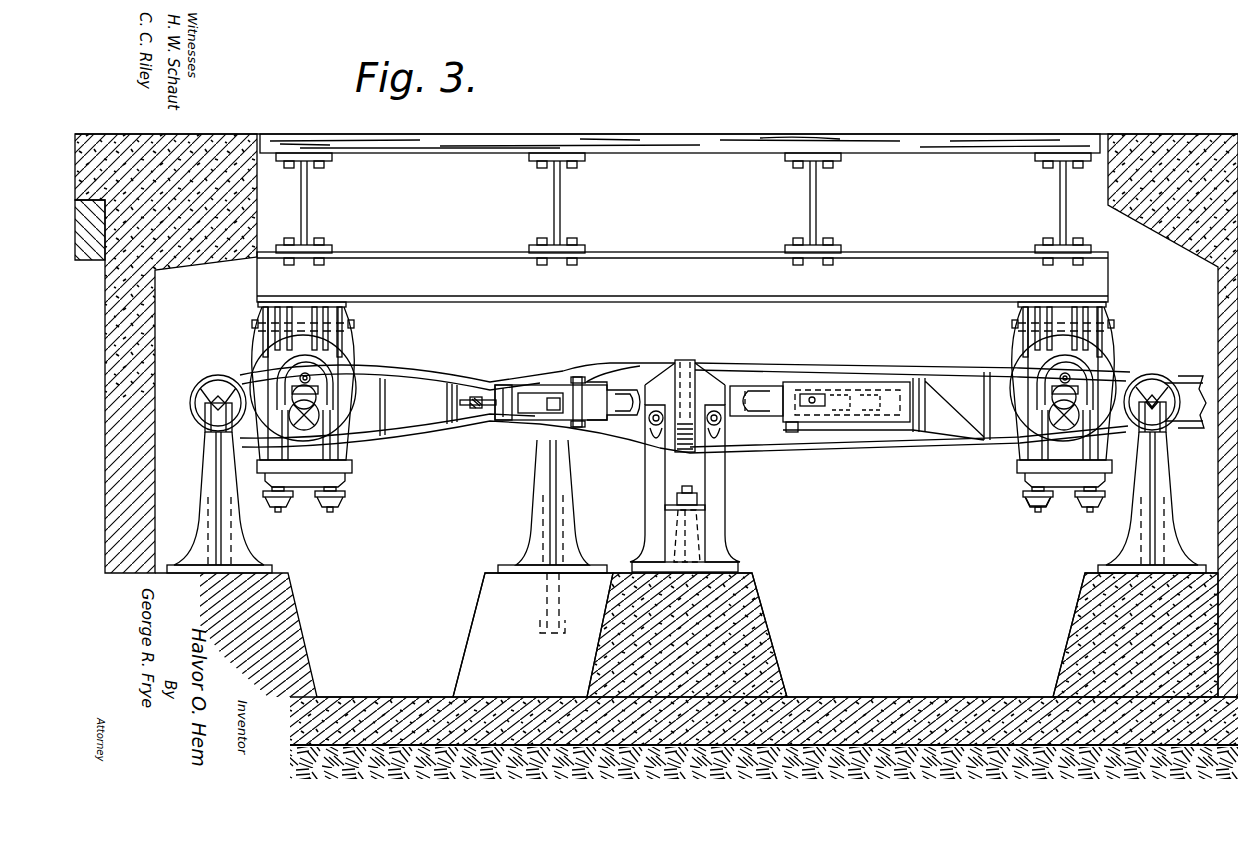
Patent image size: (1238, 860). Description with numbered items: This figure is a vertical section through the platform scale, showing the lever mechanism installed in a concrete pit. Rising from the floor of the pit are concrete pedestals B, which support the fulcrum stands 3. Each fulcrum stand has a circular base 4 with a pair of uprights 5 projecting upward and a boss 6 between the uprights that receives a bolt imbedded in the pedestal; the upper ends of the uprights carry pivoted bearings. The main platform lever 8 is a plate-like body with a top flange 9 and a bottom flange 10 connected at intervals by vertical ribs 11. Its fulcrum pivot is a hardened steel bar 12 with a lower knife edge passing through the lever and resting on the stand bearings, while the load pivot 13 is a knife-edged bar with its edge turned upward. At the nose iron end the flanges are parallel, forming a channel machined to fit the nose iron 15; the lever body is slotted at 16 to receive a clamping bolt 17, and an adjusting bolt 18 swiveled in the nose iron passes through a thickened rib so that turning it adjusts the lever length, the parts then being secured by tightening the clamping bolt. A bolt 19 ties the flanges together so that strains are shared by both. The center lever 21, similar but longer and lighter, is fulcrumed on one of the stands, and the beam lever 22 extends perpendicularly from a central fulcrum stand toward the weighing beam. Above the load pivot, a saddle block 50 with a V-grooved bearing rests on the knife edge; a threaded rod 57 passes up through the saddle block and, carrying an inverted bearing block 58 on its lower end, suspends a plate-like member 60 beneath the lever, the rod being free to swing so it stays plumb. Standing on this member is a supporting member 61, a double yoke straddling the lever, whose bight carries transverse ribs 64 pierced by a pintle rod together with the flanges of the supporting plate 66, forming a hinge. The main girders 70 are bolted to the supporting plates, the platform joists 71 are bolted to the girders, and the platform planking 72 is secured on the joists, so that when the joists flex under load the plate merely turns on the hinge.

The fulcrum stand 3 is at (238, 540).
The circular base 4 is at (728, 563).
The uprights 5 is at (645, 474).
The boss 6 is at (698, 522).
The main platform lever 8 is at (396, 432).
The top flange 9 is at (428, 377).
The bottom flange 10 is at (410, 436).
The vertical ribs 11 is at (984, 400).
The fulcrum pivot bar 12 is at (202, 400).
The load pivot 13 is at (328, 404).
The nose iron 15 is at (598, 382).
The slot 16 is at (794, 432).
The clamping bolt 17 is at (553, 399).
The adjusting bolt 18 is at (470, 397).
The tie bolt 19 is at (576, 377).
The center lever 21 is at (692, 362).
The beam lever 22 is at (888, 440).
The saddle block 50 is at (268, 376).
The threaded rod 57 is at (340, 509).
The lower bearing block 58 is at (1027, 500).
The plate-like member 60 is at (346, 478).
The supporting member (double yoke) 61 is at (352, 352).
The transverse ribs 64 is at (347, 334).
The supporting plate 66 is at (260, 305).
The main girder 70 is at (405, 258).
The platform joist 71 is at (562, 212).
The platform planking 72 is at (698, 133).
The concrete pedestal B is at (292, 614).